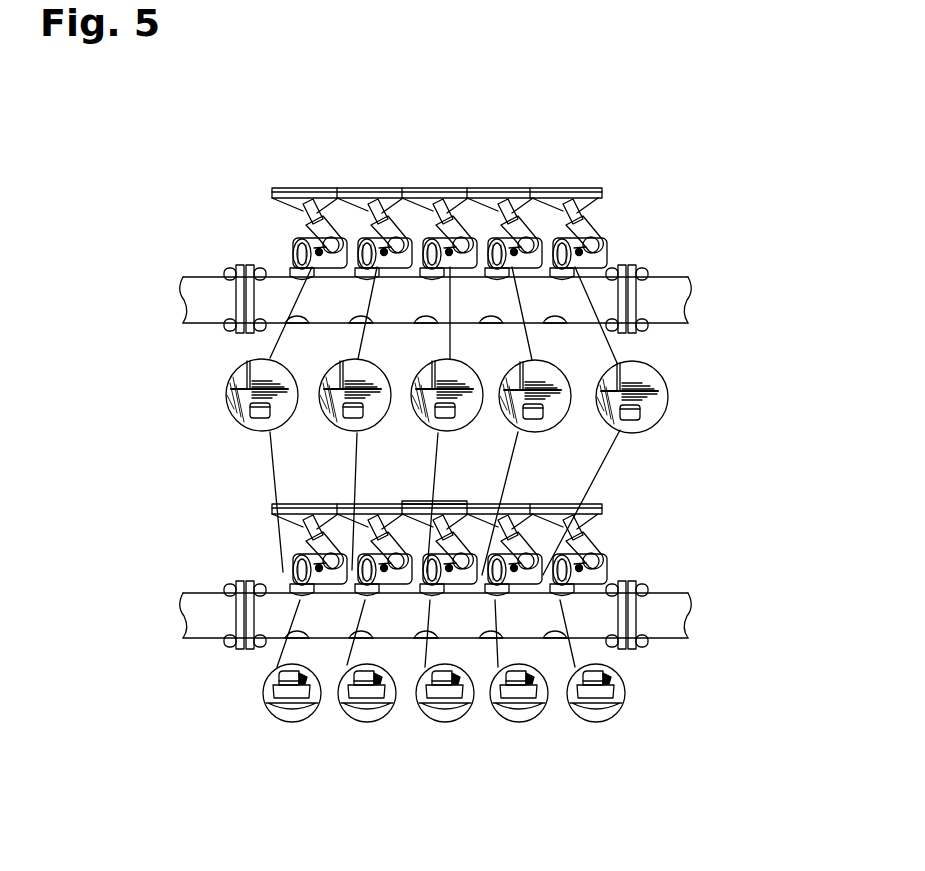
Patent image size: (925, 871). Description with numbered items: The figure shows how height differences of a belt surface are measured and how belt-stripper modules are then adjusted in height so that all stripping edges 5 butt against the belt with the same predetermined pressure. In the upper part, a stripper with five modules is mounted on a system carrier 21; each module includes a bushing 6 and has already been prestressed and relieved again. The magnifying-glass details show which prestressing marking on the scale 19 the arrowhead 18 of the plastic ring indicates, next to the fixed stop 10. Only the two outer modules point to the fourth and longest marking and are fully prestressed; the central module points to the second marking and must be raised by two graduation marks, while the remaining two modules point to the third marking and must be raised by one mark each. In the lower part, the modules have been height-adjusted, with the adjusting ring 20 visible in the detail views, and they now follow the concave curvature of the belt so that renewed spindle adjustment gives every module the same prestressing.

The stripping edge 5 is at (560, 194).
The bushing 6 is at (593, 232).
The arrowhead 18 is at (630, 390).
The scale 19 is at (643, 398).
The fixed stop 10 is at (630, 420).
The adjusting ring 20 is at (447, 688).
The system carrier 21 is at (677, 595).